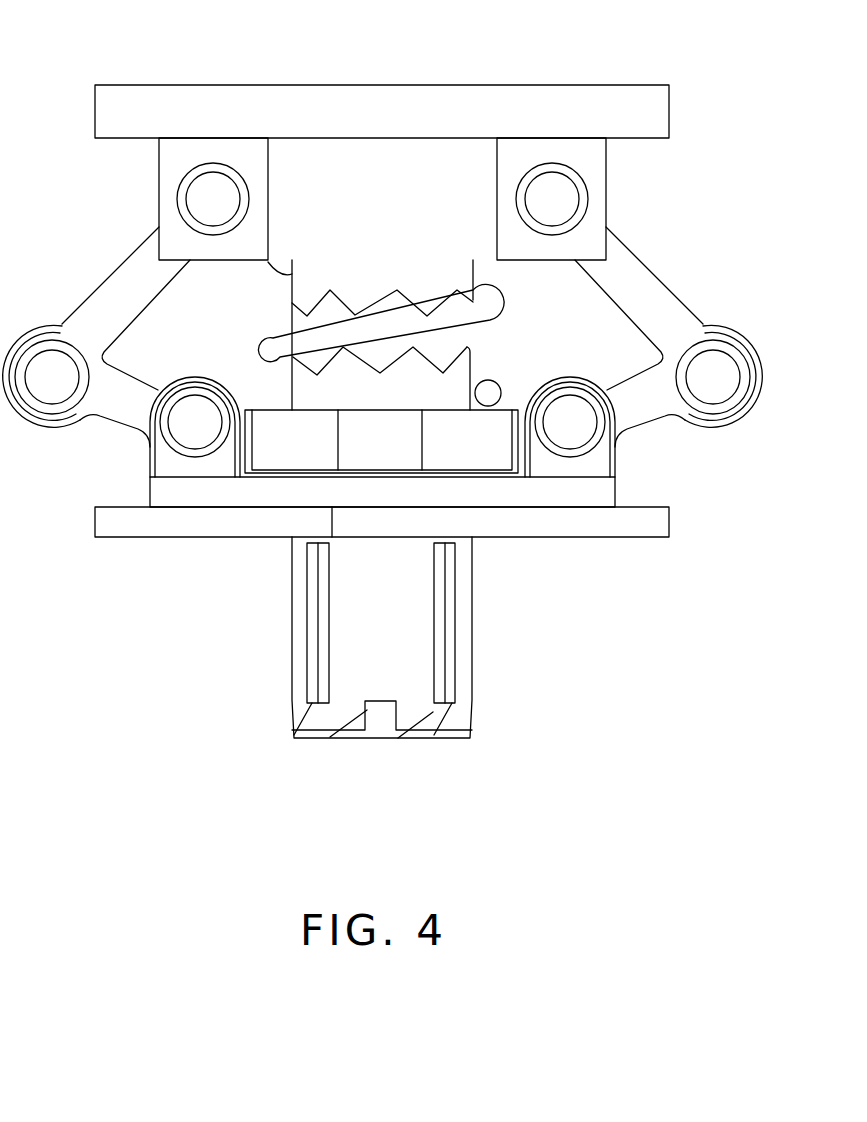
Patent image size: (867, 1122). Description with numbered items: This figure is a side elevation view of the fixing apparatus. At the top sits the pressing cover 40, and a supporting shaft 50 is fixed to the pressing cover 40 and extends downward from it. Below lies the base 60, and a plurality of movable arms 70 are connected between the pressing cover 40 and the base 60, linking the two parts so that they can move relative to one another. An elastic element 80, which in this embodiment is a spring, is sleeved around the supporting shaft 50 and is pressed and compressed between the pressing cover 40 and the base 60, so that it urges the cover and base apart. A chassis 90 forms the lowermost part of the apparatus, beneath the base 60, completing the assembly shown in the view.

The pressing cover 40 is at (573, 108).
The supporting shaft 50 is at (433, 342).
The base 60 is at (170, 494).
The movable arms 70 is at (720, 363).
The elastic element 80 is at (277, 337).
The chassis 90 is at (630, 525).